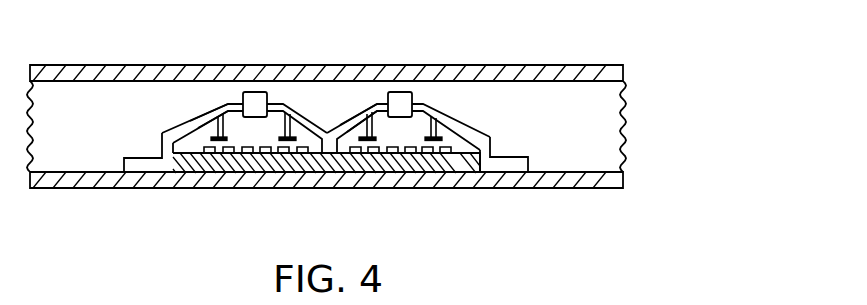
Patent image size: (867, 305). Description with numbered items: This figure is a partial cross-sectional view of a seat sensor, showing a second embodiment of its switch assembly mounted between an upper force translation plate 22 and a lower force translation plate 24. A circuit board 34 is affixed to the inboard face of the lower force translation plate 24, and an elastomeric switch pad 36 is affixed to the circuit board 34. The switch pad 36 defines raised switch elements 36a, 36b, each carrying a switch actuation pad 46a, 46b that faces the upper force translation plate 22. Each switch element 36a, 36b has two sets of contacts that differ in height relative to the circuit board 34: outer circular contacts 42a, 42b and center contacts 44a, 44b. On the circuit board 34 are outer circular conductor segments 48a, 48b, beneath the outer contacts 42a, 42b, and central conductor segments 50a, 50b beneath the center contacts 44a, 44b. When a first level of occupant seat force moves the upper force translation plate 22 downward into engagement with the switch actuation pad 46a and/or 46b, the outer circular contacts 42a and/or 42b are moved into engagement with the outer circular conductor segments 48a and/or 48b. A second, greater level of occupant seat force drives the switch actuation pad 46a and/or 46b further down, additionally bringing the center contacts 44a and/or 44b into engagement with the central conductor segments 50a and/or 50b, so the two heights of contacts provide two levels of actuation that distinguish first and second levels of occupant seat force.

The upper force translation plate 22 is at (532, 72).
The lower force translation plate 24 is at (570, 188).
The circuit board 34 is at (190, 166).
The elastomeric switch pad 36 is at (136, 157).
The switch element 36a is at (185, 121).
The switch element 36b is at (471, 125).
The outer circular contact 42a is at (223, 113).
The outer circular contact 42b is at (373, 112).
The center contact 44a is at (270, 130).
The center contact 44b is at (425, 130).
The switch actuation pad 46a is at (257, 92).
The switch actuation pad 46b is at (401, 92).
The outer circular conductor segment 48a is at (230, 153).
The outer circular conductor segment 48b is at (449, 153).
The first contact pads 50a is at (269, 153).
The second contact pads 50b is at (411, 153).